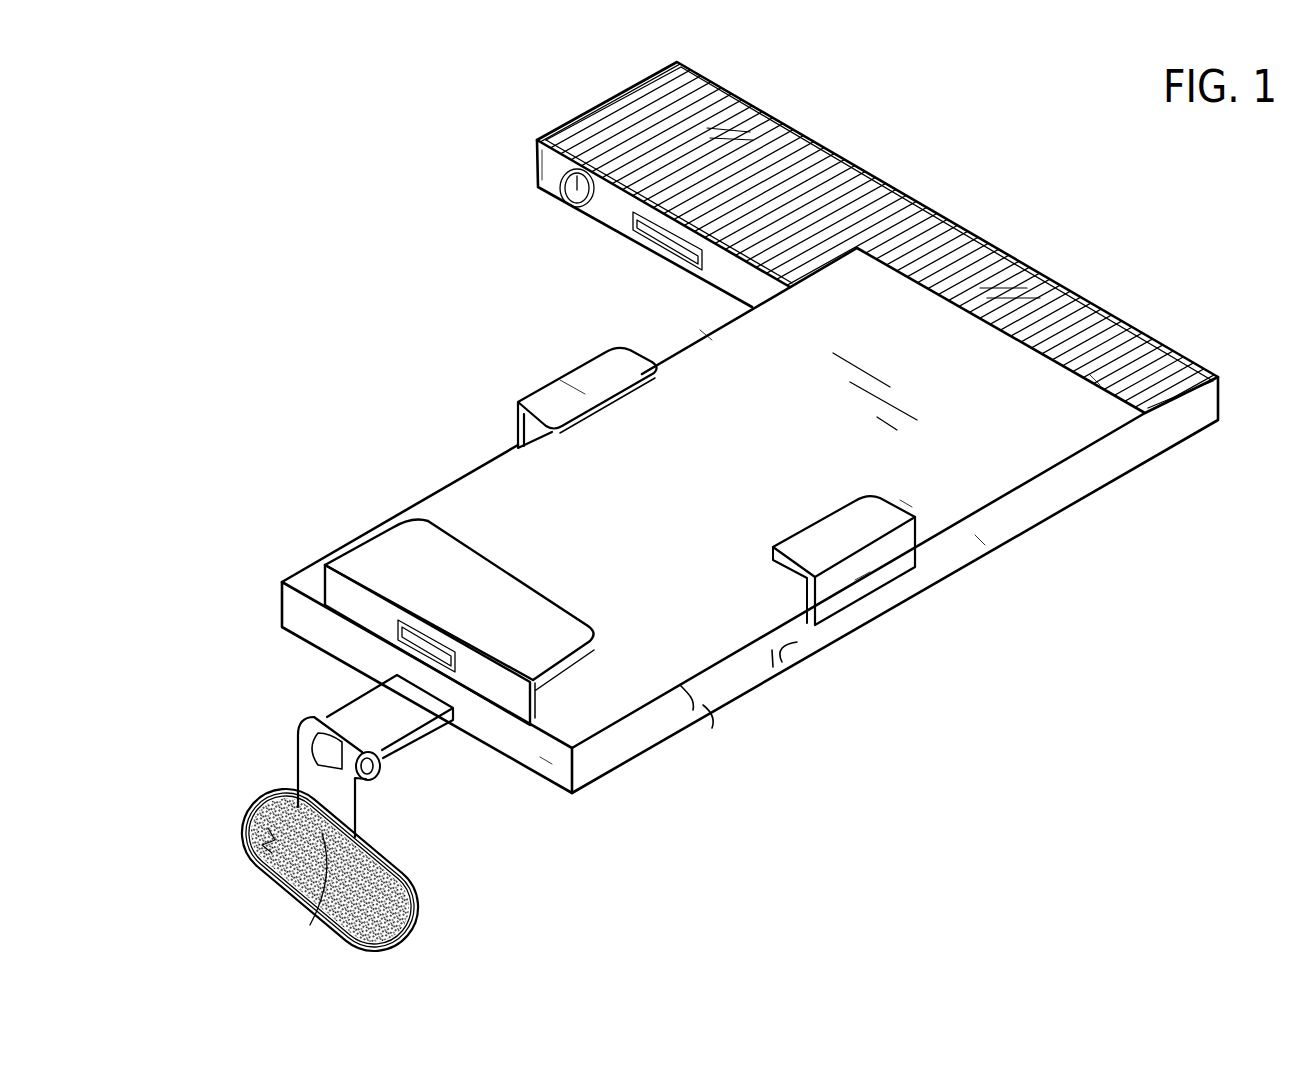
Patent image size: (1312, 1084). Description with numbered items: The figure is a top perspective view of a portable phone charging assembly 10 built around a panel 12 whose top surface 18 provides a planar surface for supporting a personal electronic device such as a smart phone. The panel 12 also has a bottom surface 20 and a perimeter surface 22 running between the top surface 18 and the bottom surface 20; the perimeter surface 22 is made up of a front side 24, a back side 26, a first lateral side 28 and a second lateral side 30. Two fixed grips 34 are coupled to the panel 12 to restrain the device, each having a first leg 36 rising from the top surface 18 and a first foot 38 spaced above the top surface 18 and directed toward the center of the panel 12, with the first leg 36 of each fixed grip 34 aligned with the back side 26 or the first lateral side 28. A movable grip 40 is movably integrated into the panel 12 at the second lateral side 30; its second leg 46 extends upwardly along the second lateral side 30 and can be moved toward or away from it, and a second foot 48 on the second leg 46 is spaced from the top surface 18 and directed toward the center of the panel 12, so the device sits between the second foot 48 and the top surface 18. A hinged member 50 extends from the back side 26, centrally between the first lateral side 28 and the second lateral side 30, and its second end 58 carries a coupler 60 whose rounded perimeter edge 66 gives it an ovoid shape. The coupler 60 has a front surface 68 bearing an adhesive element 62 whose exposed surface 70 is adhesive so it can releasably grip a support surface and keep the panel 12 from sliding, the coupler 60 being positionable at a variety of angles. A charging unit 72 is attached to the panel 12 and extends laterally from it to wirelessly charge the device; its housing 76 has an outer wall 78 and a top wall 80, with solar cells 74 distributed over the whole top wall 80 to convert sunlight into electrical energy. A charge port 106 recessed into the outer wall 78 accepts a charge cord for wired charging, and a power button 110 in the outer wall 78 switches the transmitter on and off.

The portable phone charging assembly 10 is at (922, 151).
The panel 12 is at (298, 578).
The top surface 18 is at (468, 518).
The bottom surface 20 is at (712, 728).
The perimeter surface 22 is at (784, 660).
The front side 24 is at (1093, 383).
The back side 26 is at (545, 760).
The first lateral side 28 is at (707, 337).
The second lateral side 30 is at (980, 540).
The fixed grip 34 is at (518, 391).
The first leg 36 is at (518, 428).
The first foot 38 is at (572, 376).
The movable grip 40 is at (890, 560).
The second leg 46 is at (863, 578).
The second foot 48 is at (882, 515).
The member 50 is at (390, 768).
The second end 58 is at (310, 925).
The coupler 60 is at (417, 902).
The adhesive element 62 is at (290, 882).
The perimeter edge 66 is at (298, 807).
The front surface 68 is at (405, 942).
The exposed surface 70 is at (258, 818).
The charging unit 72 is at (744, 91).
The solar cells 74 is at (717, 120).
The housing 76 is at (547, 172).
The outer wall 78 is at (617, 200).
The top wall 80 is at (853, 170).
The charge port 106 is at (668, 247).
The power button 110 is at (577, 198).